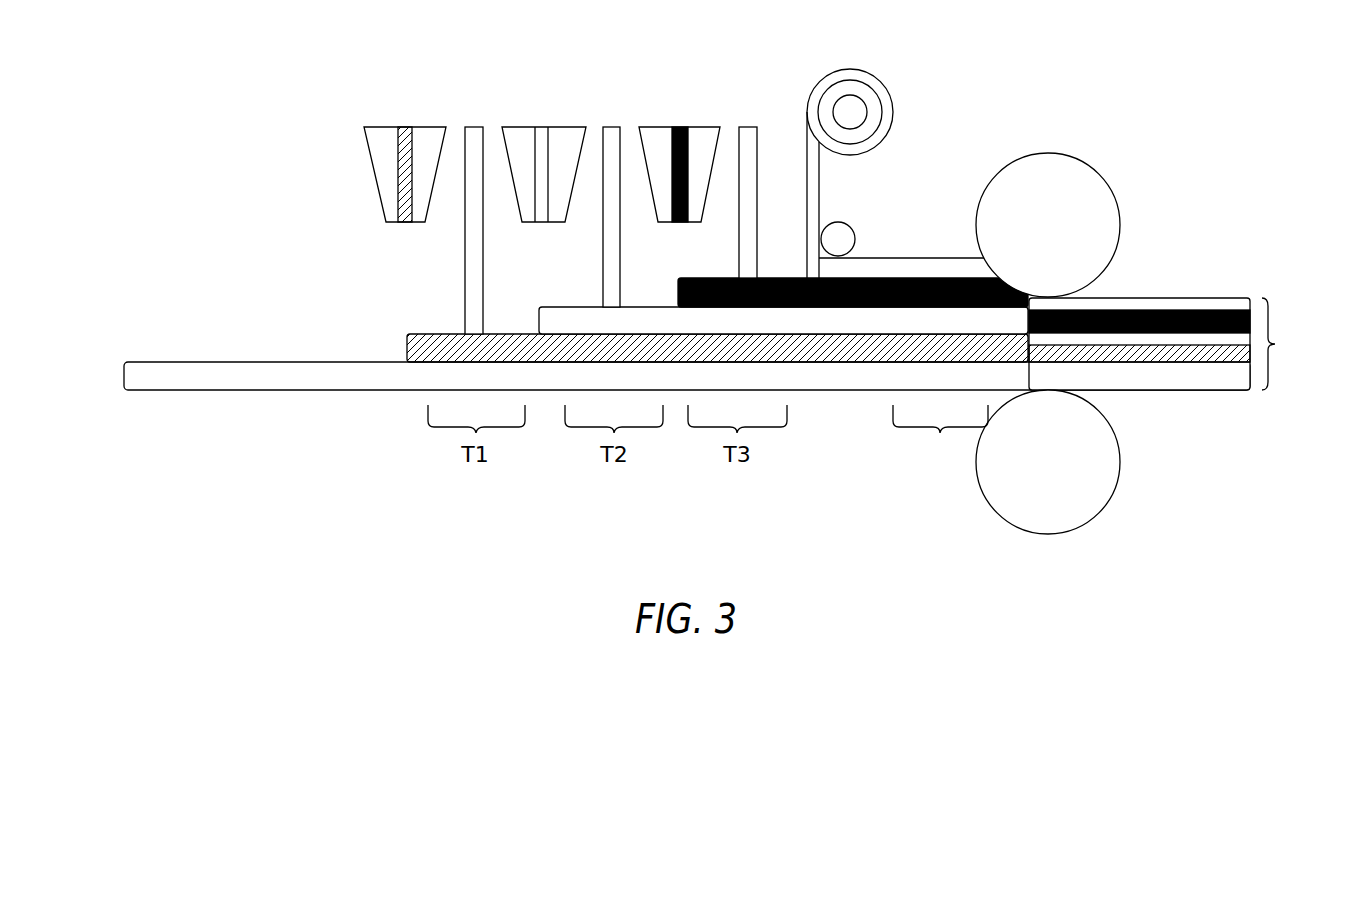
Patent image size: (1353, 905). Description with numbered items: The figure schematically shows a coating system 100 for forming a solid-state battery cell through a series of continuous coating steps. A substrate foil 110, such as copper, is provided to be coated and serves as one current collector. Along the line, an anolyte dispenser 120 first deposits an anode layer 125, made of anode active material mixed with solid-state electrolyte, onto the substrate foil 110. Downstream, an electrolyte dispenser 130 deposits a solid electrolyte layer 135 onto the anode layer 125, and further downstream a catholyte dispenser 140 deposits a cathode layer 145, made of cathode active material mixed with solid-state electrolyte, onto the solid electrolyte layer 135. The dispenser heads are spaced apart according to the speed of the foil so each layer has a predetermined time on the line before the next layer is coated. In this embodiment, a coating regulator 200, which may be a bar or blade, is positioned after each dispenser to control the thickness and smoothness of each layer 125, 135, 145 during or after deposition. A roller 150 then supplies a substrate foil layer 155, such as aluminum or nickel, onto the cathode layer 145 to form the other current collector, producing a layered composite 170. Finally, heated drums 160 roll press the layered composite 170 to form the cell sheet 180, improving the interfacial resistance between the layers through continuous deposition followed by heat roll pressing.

The coating system 100 is at (170, 106).
The substrate foil 110 is at (147, 362).
The anolyte dispenser 120 is at (405, 141).
The anode layer 125 is at (426, 334).
The electrolyte dispenser 130 is at (543, 141).
The solid electrolyte layer 135 is at (568, 307).
The catholyte dispenser 140 is at (680, 141).
The cathode layer 145 is at (700, 278).
The roller 150 is at (880, 82).
The substrate foil layer 155 is at (906, 257).
The heated drums 160 is at (1096, 170).
The layered composite 170 is at (940, 436).
The cell sheet 180 is at (1178, 344).
The coating regulator 200 is at (473, 127).